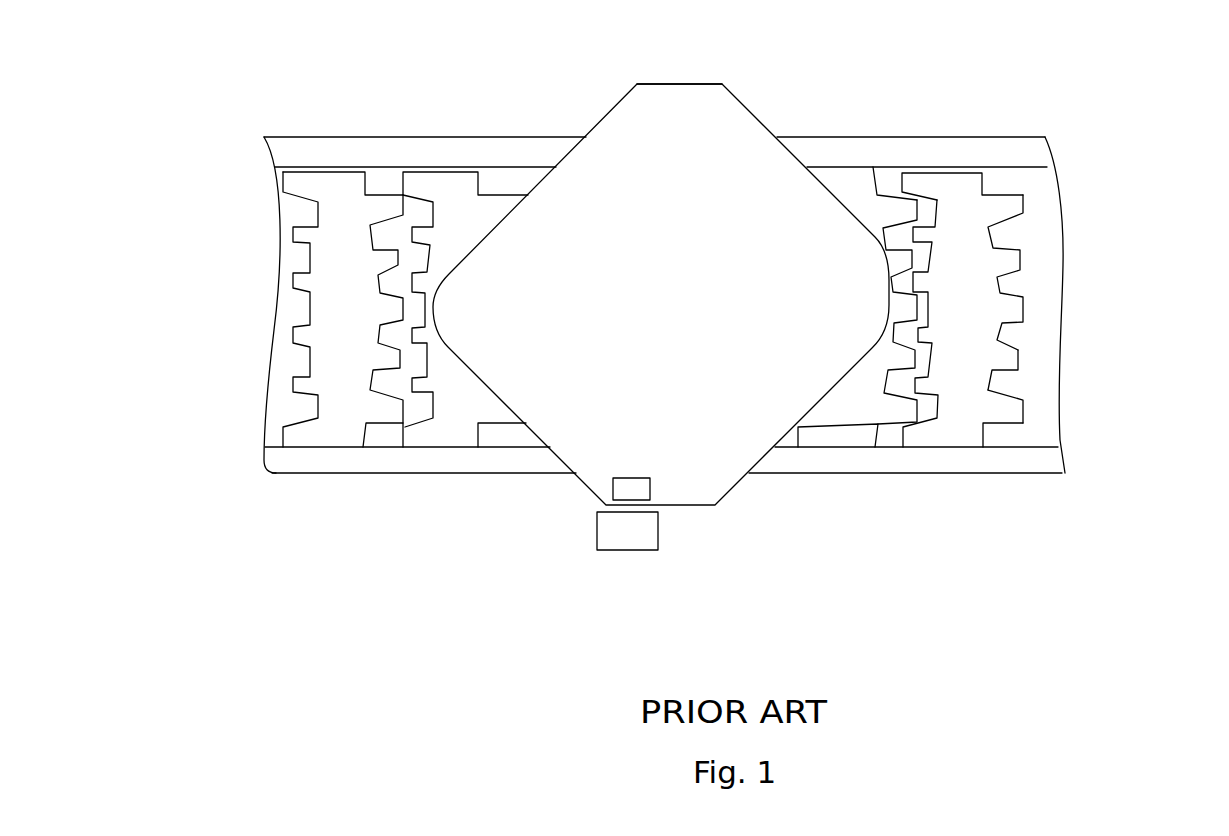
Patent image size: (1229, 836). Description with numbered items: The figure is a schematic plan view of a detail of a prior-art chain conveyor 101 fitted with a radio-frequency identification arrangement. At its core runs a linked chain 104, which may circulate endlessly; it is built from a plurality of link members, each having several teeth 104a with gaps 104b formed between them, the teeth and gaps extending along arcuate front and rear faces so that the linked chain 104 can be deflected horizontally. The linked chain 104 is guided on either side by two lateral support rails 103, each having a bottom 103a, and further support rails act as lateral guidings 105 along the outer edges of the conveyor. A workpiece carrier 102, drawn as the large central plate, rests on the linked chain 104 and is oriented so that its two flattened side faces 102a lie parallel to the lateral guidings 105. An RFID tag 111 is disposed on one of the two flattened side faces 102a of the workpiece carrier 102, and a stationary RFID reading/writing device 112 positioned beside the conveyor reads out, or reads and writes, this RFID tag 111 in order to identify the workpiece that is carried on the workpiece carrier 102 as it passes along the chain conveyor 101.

The prior art MEMS device 101 is at (207, 72).
The workpiece carrier 102 is at (742, 150).
The flattened side face 102a is at (678, 84).
The support rail 103 is at (444, 119).
The bottom of support rail 103a is at (1052, 235).
The linked chain 104 is at (348, 433).
The tooth 104a is at (1003, 410).
The gap 104b is at (1003, 380).
The support rail as lateral guiding 105 is at (1008, 146).
The RFID tag 111 is at (640, 487).
The RFID reading/writing device 112 is at (632, 540).